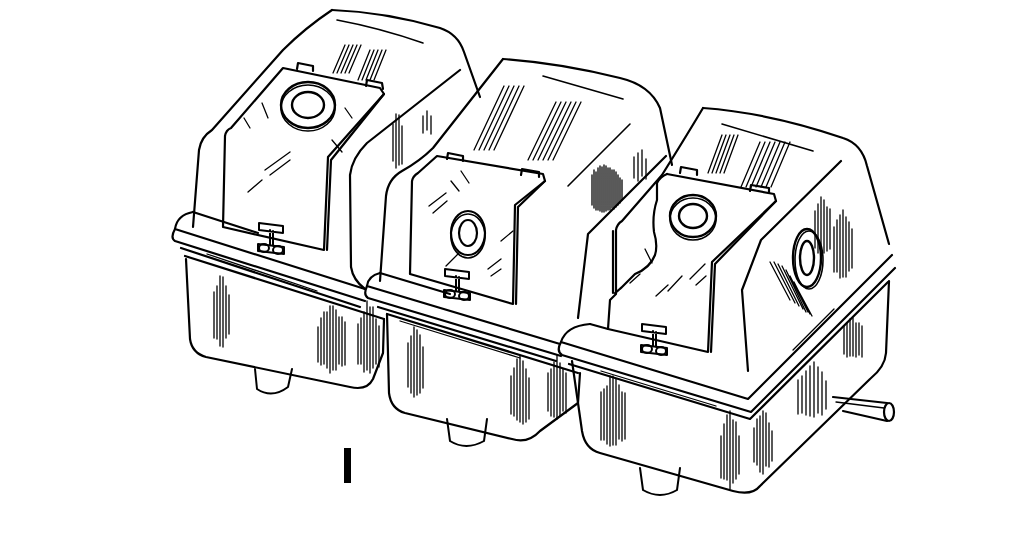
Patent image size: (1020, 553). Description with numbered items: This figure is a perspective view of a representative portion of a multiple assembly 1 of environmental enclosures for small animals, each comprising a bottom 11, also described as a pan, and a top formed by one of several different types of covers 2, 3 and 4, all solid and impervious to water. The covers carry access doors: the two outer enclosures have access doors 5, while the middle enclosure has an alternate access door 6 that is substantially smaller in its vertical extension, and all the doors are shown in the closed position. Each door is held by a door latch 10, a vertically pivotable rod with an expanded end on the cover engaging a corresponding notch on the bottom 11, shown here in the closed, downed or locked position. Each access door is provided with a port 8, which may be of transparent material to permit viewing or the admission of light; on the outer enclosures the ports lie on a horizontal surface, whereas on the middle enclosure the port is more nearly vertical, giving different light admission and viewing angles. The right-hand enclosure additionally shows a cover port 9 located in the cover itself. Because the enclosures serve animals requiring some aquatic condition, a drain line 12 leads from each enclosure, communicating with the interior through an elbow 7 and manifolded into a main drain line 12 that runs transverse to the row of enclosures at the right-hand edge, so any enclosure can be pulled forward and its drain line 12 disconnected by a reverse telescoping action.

The battery assembly 1 is at (679, 82).
The cover 2 is at (461, 68).
The cover 3 is at (647, 117).
The cover 4 is at (853, 167).
The access door 5 is at (276, 108).
The access door 6 is at (489, 176).
The elbow 7 is at (253, 383).
The port 8 is at (295, 97).
The cover port 9 is at (809, 240).
The door latch 10 is at (256, 233).
The bottom 11 is at (318, 384).
The drain line 12 is at (840, 407).